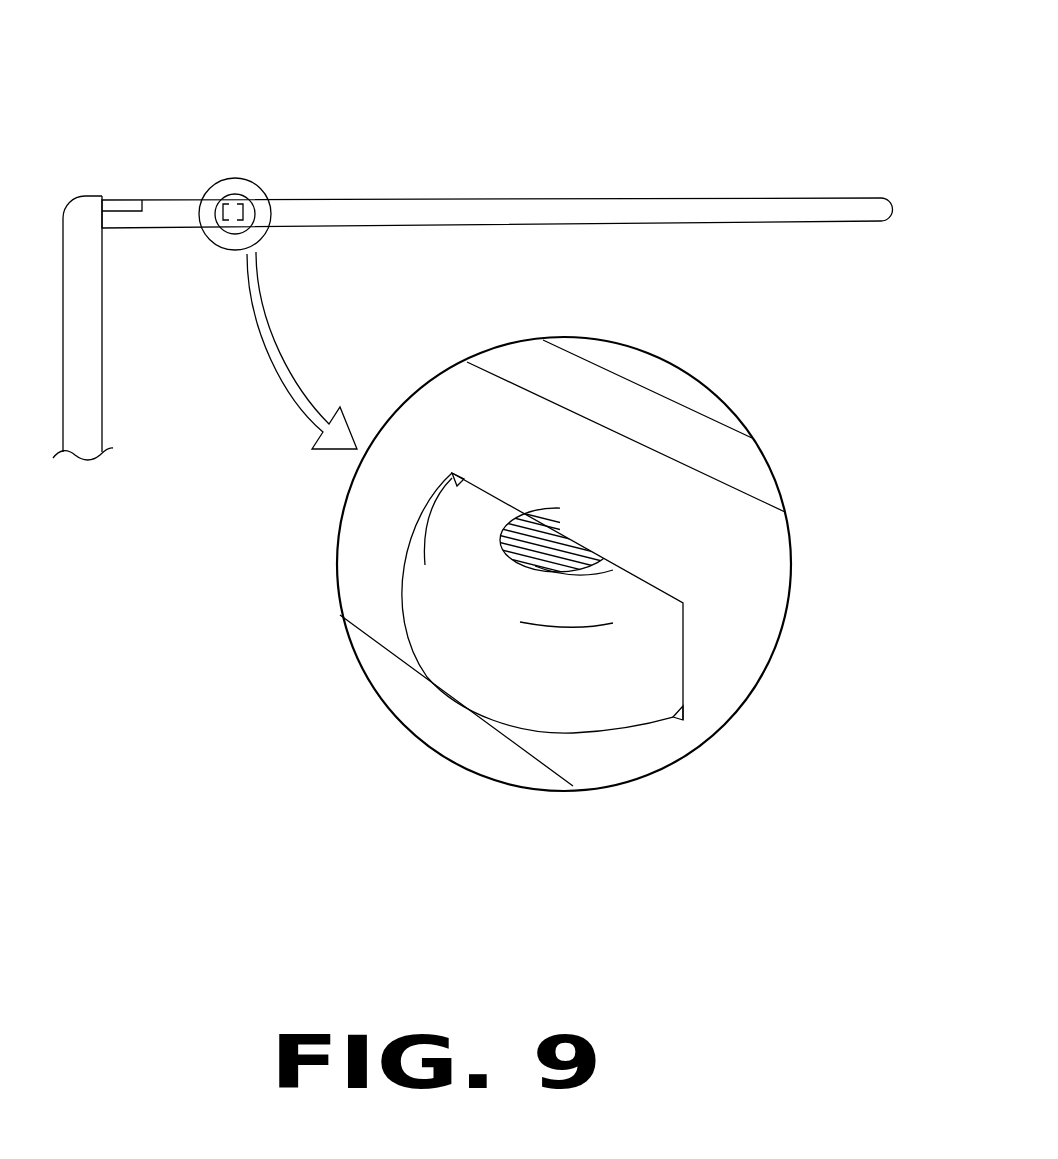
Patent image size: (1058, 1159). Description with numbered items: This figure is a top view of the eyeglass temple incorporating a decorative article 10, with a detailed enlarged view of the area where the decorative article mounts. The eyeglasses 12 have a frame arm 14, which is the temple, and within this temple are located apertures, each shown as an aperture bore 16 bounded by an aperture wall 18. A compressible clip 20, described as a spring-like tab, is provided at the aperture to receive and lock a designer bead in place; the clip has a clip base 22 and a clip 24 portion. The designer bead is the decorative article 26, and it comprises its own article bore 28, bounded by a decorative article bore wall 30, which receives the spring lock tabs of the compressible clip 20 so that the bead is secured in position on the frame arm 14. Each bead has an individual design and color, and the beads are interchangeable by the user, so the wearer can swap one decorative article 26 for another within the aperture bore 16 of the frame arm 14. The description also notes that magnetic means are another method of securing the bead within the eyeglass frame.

The eyeglass temple incorporating decorative article 10 is at (338, 100).
The eyeglasses 12 is at (87, 430).
The frame arm 14 is at (485, 207).
The aperture bore 16 is at (467, 540).
The aperture wall 18 is at (683, 648).
The compressible clip 20 is at (555, 605).
The clip base 22 is at (530, 635).
The clip 24 is at (630, 663).
The decorative article 26 is at (217, 242).
The article bore 28 is at (592, 562).
The decorative article bore wall 30 is at (530, 530).